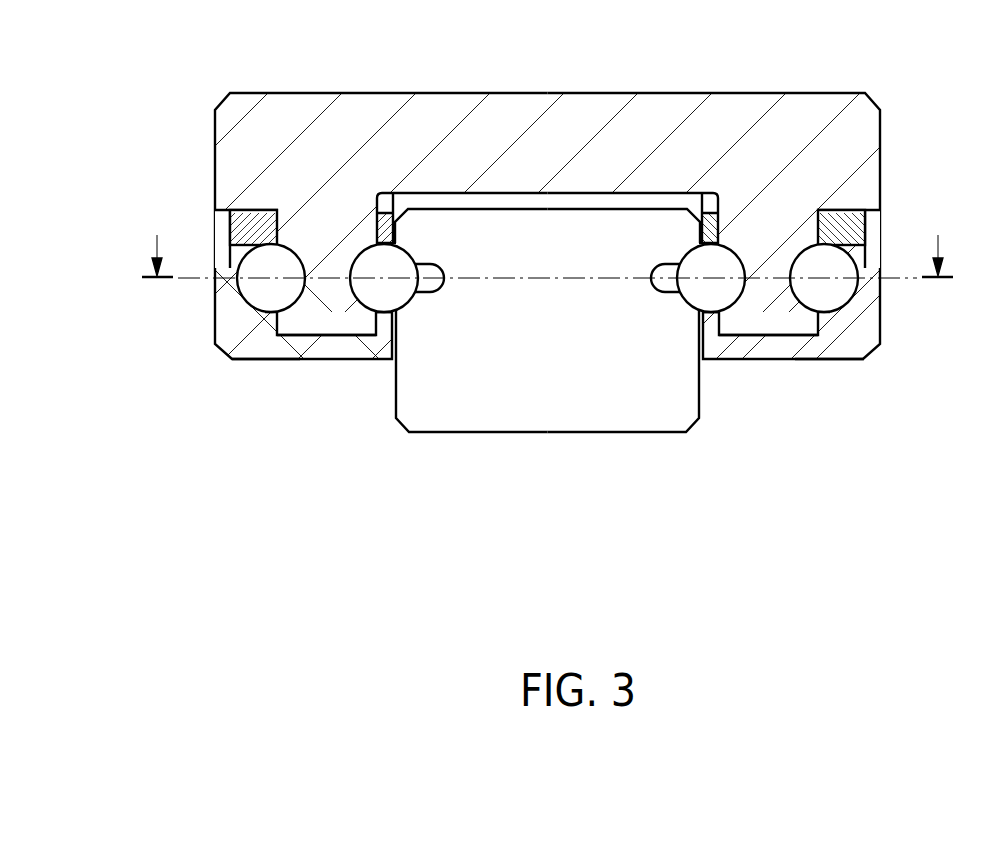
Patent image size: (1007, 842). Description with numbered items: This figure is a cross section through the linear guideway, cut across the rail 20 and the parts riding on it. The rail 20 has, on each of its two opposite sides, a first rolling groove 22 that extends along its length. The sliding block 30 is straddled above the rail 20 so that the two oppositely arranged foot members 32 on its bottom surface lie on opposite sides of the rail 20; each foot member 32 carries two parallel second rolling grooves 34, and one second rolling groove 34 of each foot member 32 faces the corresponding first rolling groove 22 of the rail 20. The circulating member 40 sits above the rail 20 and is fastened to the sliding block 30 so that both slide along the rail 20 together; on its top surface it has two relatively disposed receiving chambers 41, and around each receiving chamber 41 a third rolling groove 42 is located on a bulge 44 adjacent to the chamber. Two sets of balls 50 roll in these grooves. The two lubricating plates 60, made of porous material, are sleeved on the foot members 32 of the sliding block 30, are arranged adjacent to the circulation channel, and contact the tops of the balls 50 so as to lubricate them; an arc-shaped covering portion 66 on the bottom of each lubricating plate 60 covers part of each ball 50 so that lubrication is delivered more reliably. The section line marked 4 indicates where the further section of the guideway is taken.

The rail 20 is at (506, 388).
The rail ball groove 22 is at (413, 300).
The slider block 30 is at (720, 125).
The block recess 32 is at (316, 318).
The block ball groove 34 is at (298, 255).
The retainer 40 is at (231, 369).
The retainer lip 41 is at (343, 335).
The retainer side wall 42 is at (237, 292).
The retainer bottom 44 is at (238, 322).
The ball 50 is at (263, 257).
The holding block 60 is at (256, 210).
The pocket wall 66 is at (232, 248).
The section line 4- 4 is at (548, 262).